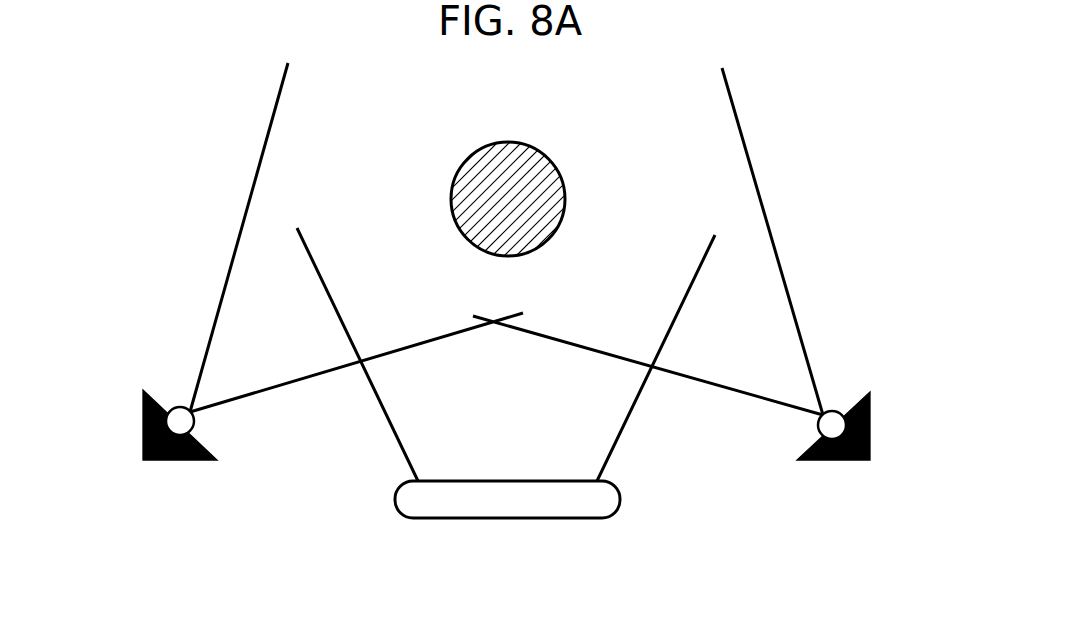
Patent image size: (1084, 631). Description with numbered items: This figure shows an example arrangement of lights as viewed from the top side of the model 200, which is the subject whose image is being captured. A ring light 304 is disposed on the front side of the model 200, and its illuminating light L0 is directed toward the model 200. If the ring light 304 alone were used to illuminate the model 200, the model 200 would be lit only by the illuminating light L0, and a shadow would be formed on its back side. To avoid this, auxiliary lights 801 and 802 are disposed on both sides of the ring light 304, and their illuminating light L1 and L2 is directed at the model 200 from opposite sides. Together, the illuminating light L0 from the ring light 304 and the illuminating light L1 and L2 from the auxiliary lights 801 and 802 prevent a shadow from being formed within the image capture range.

The model 200 is at (475, 164).
The ring light 304 is at (397, 498).
The auxiliary light 801 is at (143, 435).
The auxiliary light 802 is at (870, 425).
The illuminating light L0 is at (605, 463).
The illuminating light L1 is at (222, 298).
The illuminating light L2 is at (792, 300).